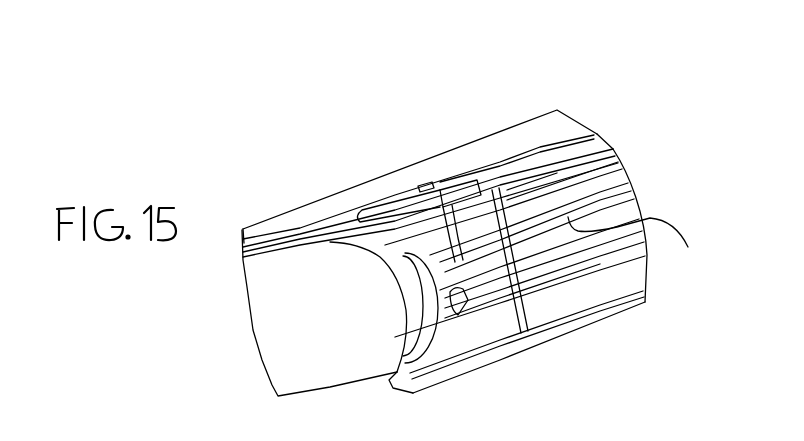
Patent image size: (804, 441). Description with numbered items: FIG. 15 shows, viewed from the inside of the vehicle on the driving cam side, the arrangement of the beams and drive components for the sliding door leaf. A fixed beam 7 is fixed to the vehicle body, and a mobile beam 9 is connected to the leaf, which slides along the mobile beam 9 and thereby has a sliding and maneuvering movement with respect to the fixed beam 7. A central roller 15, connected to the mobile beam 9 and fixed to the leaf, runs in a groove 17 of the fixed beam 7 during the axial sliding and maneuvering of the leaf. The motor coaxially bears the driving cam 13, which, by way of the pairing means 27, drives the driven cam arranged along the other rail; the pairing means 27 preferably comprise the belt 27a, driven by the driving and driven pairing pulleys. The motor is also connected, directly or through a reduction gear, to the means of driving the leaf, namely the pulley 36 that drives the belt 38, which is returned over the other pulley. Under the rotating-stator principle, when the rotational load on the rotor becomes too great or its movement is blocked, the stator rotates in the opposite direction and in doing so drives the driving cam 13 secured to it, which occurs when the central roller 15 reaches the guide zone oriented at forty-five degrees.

The fixed beam 7 is at (495, 135).
The mobile beam 9 is at (625, 177).
The driving cam 13 is at (266, 339).
The central roller 15 is at (377, 203).
The groove 17 is at (423, 185).
The pairing means 27 is at (575, 193).
The belt 27a is at (573, 272).
The pulley 36 is at (450, 292).
The belt 38 is at (646, 249).